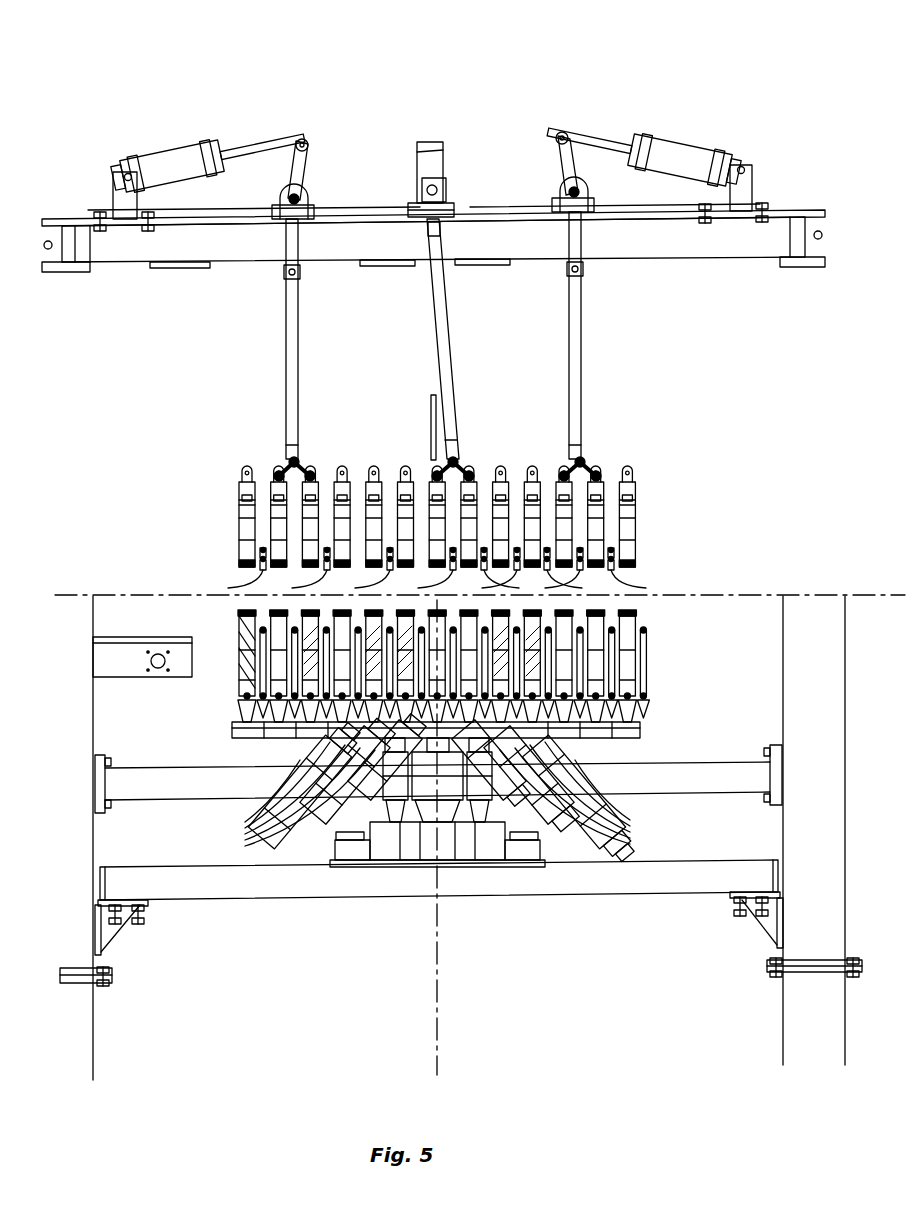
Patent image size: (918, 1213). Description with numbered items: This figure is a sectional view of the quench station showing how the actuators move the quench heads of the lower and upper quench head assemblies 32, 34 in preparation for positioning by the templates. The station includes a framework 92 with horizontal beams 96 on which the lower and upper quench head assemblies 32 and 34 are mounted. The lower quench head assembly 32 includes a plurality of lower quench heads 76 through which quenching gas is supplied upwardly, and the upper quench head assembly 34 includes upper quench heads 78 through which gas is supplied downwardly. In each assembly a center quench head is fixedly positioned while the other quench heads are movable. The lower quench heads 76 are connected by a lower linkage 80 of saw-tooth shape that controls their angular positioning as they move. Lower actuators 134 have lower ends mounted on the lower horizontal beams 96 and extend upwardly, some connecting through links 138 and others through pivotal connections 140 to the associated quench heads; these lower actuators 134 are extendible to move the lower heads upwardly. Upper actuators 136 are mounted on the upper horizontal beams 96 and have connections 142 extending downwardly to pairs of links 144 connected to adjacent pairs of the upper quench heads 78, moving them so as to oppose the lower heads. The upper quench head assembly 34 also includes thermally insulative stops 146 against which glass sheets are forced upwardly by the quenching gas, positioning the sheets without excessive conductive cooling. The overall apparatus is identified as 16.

The lifting beam assembly 16 is at (552, 86).
The lower quench head assembly 32 is at (162, 690).
The upper quench head assembly 34 is at (222, 546).
The lower quench heads 76 is at (598, 628).
The upper quench heads 78 is at (592, 490).
The lower linkage 80 is at (240, 648).
The framework 92 is at (852, 782).
The horizontal beams 96 is at (592, 883).
The lower actuators 134 is at (439, 789).
The upper actuators 136 is at (187, 150).
The links 138 is at (612, 742).
The pivotal connections 140 is at (622, 700).
The connections 142 is at (290, 380).
The links 144 is at (282, 462).
The thermally insulative stops 146 is at (268, 592).